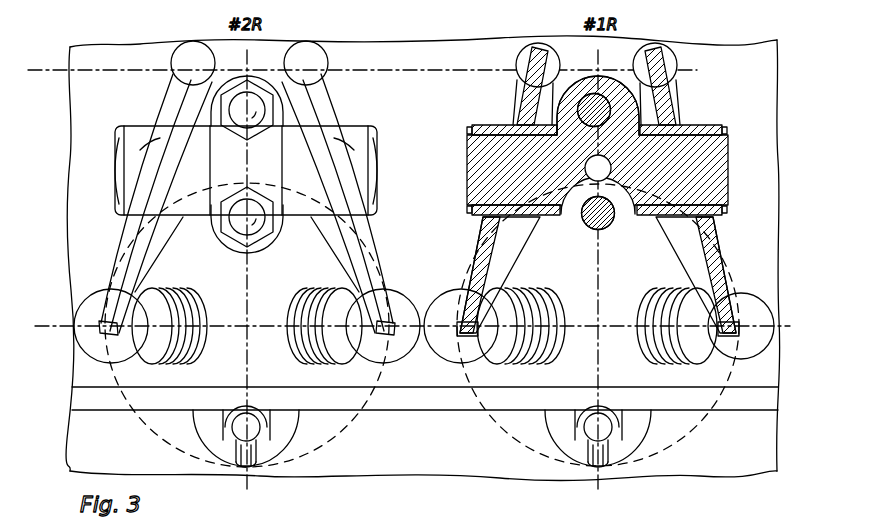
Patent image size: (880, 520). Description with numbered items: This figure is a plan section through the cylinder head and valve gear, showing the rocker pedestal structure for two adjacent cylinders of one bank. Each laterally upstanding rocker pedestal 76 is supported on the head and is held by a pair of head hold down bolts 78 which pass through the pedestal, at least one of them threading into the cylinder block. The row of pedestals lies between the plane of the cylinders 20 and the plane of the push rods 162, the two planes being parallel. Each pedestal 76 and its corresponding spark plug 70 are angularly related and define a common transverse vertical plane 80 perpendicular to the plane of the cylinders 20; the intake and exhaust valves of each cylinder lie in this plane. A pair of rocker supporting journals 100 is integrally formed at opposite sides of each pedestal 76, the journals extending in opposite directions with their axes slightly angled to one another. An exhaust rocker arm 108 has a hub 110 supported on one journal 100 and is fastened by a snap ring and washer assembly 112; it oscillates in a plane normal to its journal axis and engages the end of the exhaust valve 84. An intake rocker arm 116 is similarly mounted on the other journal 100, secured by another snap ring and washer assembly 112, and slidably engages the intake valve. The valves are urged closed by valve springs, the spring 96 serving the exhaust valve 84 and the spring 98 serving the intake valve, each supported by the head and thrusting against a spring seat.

The plane of the cylinders 20 is at (47, 331).
The spark plug 70 is at (262, 438).
The rocker pedestal 76 is at (208, 112).
The head hold down bolt 78 is at (593, 230).
The common transverse vertical plane 80 is at (247, 378).
The exhaust valve 84 is at (127, 352).
The valve spring 96 is at (659, 352).
The valve spring 98 is at (540, 343).
The rocker supporting journal 100 is at (490, 131).
The exhaust rocker arm 108 is at (715, 244).
The hub 110 is at (698, 130).
The snap ring and washer assembly 112 is at (726, 132).
The intake rocker arm 116 is at (492, 230).
The plane of push rods 162 is at (44, 72).